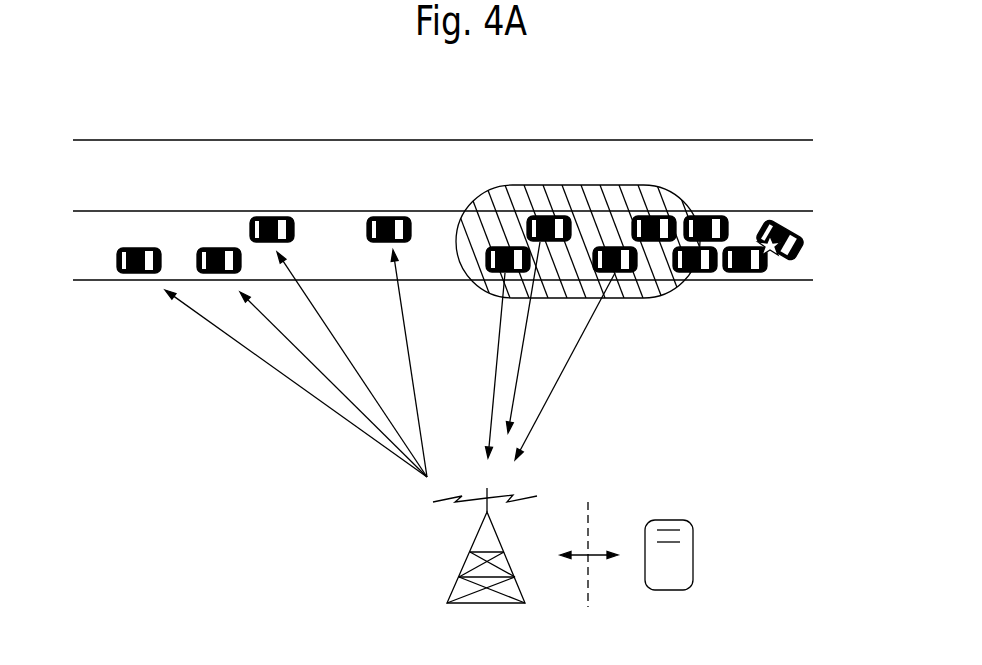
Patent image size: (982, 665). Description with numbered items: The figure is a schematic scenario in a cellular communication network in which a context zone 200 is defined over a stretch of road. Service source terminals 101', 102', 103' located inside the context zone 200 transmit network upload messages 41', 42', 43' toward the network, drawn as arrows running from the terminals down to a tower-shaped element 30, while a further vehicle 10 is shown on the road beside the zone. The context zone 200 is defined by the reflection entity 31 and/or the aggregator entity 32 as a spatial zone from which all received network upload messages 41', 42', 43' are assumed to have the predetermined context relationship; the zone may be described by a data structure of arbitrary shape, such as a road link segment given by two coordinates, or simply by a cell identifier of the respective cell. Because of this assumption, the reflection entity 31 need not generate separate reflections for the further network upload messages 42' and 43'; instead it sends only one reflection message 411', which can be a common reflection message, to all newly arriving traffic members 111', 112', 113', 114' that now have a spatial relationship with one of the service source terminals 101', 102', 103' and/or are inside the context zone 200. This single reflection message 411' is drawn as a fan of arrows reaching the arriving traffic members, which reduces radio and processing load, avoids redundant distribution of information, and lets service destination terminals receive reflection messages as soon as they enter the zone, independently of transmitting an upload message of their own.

The newly arriving traffic member 114' is at (146, 171).
The newly arriving traffic member 113' is at (226, 171).
The newly arriving traffic member 112' is at (278, 155).
The newly arriving traffic member 111' is at (402, 155).
The service source terminal 103' is at (508, 170).
The service source terminal 102' is at (554, 155).
The service source terminal 101' is at (614, 170).
The context zone 200 is at (648, 186).
The accident vehicle 10 is at (745, 246).
The reflection message 411' is at (267, 363).
The network upload message 41' is at (607, 366).
The network upload message 42' is at (602, 337).
The network upload message 43' is at (593, 365).
The base station 30 is at (457, 577).
The reflection entity 31 is at (741, 555).
The aggregator entity 32 is at (693, 555).